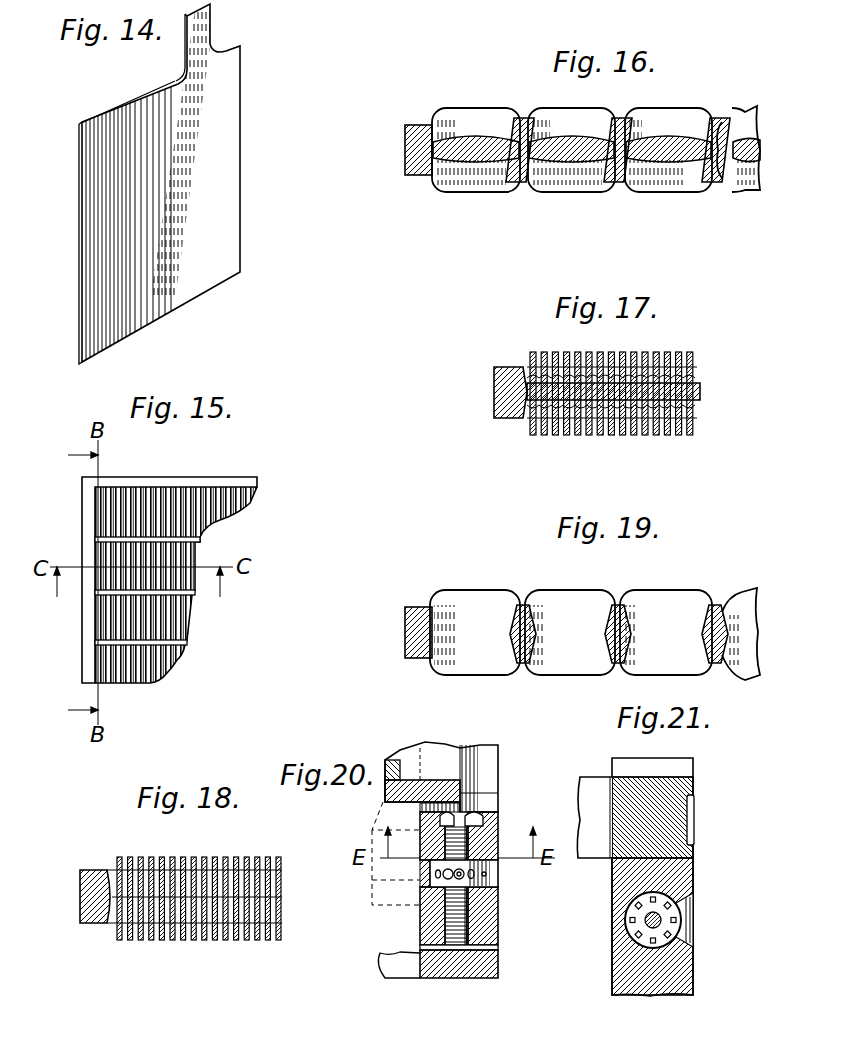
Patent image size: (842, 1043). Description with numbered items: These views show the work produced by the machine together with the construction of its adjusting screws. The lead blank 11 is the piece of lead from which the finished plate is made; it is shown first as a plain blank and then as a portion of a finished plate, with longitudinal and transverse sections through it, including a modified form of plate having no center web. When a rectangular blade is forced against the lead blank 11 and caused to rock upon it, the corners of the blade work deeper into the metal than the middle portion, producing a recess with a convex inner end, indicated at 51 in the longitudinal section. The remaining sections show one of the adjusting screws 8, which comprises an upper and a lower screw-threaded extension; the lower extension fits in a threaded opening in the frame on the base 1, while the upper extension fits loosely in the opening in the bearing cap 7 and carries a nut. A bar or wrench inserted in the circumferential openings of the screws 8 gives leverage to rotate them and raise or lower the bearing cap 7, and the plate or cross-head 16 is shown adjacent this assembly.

In FIG. 14, the lead blank 11 is at (231, 170).
In FIG. 15, the lead blank 11 is at (250, 480).
In FIG. 16, the lead blank 11 is at (405, 168).
In FIG. 17, the lead blank 11 is at (496, 407).
In FIG. 18, the lead blank 11 is at (80, 886).
In FIG. 19, the lead blank 11 is at (405, 634).
In FIG. 16, the recess with convex inner end 51 is at (477, 135).
In FIG. 20, the plate or cross-head 16 is at (500, 790).
In FIG. 20, the screws 8 is at (484, 905).
In FIG. 21, the screws 8 is at (683, 912).
In FIG. 20, the bearing caps 7 is at (500, 935).
In FIG. 21, the bearing caps 7 is at (612, 972).
In FIG. 20, the base 1 is at (472, 978).
In FIG. 21, the base 1 is at (680, 822).